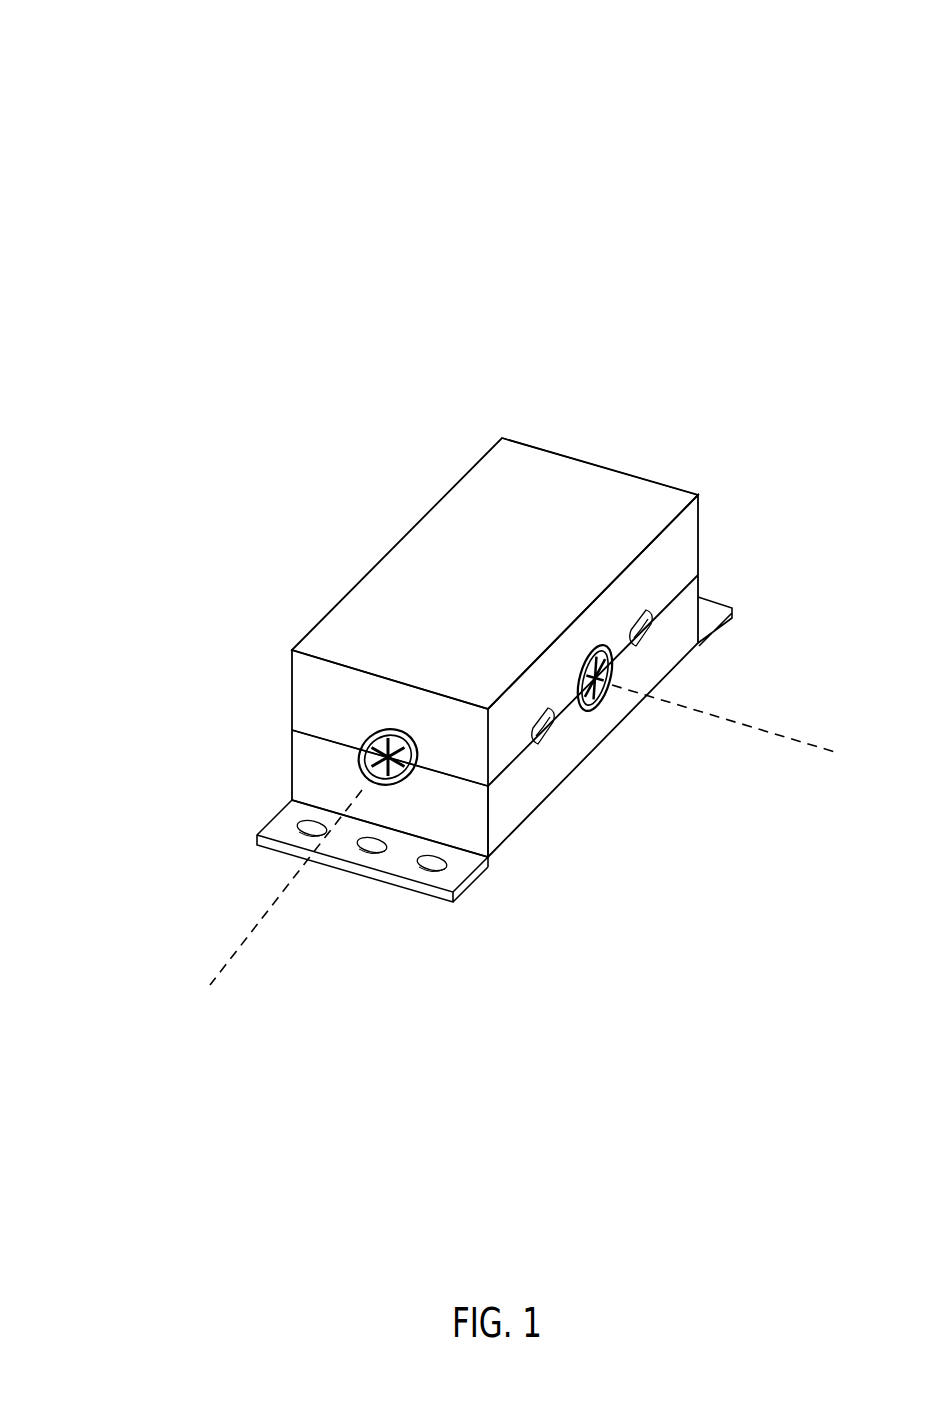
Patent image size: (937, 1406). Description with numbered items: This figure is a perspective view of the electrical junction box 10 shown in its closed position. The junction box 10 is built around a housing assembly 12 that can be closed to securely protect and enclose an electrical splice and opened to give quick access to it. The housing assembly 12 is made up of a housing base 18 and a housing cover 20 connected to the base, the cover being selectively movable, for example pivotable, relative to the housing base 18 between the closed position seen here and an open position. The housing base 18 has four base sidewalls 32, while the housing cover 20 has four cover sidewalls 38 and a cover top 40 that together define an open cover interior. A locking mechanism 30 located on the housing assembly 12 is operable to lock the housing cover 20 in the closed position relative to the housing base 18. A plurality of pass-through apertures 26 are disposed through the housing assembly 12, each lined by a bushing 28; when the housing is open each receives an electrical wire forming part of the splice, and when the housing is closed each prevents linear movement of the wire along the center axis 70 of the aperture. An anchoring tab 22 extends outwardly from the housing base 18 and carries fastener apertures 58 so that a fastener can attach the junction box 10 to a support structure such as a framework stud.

The electrical junction box 10 is at (128, 183).
The housing assembly 12 is at (702, 532).
The housing base 18 is at (290, 760).
The housing cover 20 is at (290, 678).
The anchoring tab 22 is at (272, 850).
The pass-through apertures 26 is at (600, 714).
The bushings 28 is at (604, 643).
The locking mechanism 30 is at (536, 749).
The base sidewalls 32 is at (334, 801).
The cover sidewalls 38 is at (349, 706).
The cover top 40 is at (434, 604).
The fastener apertures 58 is at (379, 860).
The center axis 70 is at (243, 943).